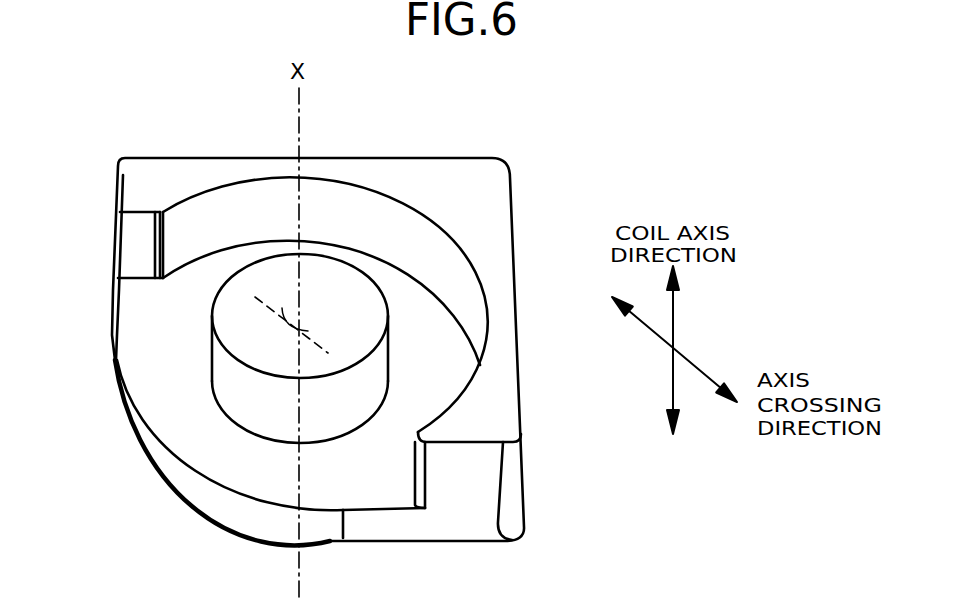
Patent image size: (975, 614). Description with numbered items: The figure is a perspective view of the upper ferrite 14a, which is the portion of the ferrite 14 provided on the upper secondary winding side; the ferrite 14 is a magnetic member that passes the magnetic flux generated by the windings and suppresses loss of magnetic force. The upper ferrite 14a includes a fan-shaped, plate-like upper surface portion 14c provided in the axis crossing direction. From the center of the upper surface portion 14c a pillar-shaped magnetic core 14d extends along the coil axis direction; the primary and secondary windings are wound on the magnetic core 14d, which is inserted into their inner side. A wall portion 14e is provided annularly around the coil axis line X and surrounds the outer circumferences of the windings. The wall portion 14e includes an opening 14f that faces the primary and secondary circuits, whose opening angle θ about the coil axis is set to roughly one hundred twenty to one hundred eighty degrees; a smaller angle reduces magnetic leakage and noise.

The ferrite 14 is at (306, 316).
The upper ferrite 14a is at (502, 125).
The upper surface portion 14c is at (192, 437).
The magnetic core 14d is at (237, 318).
The wall portion 14e is at (222, 220).
The opening 14f is at (248, 489).